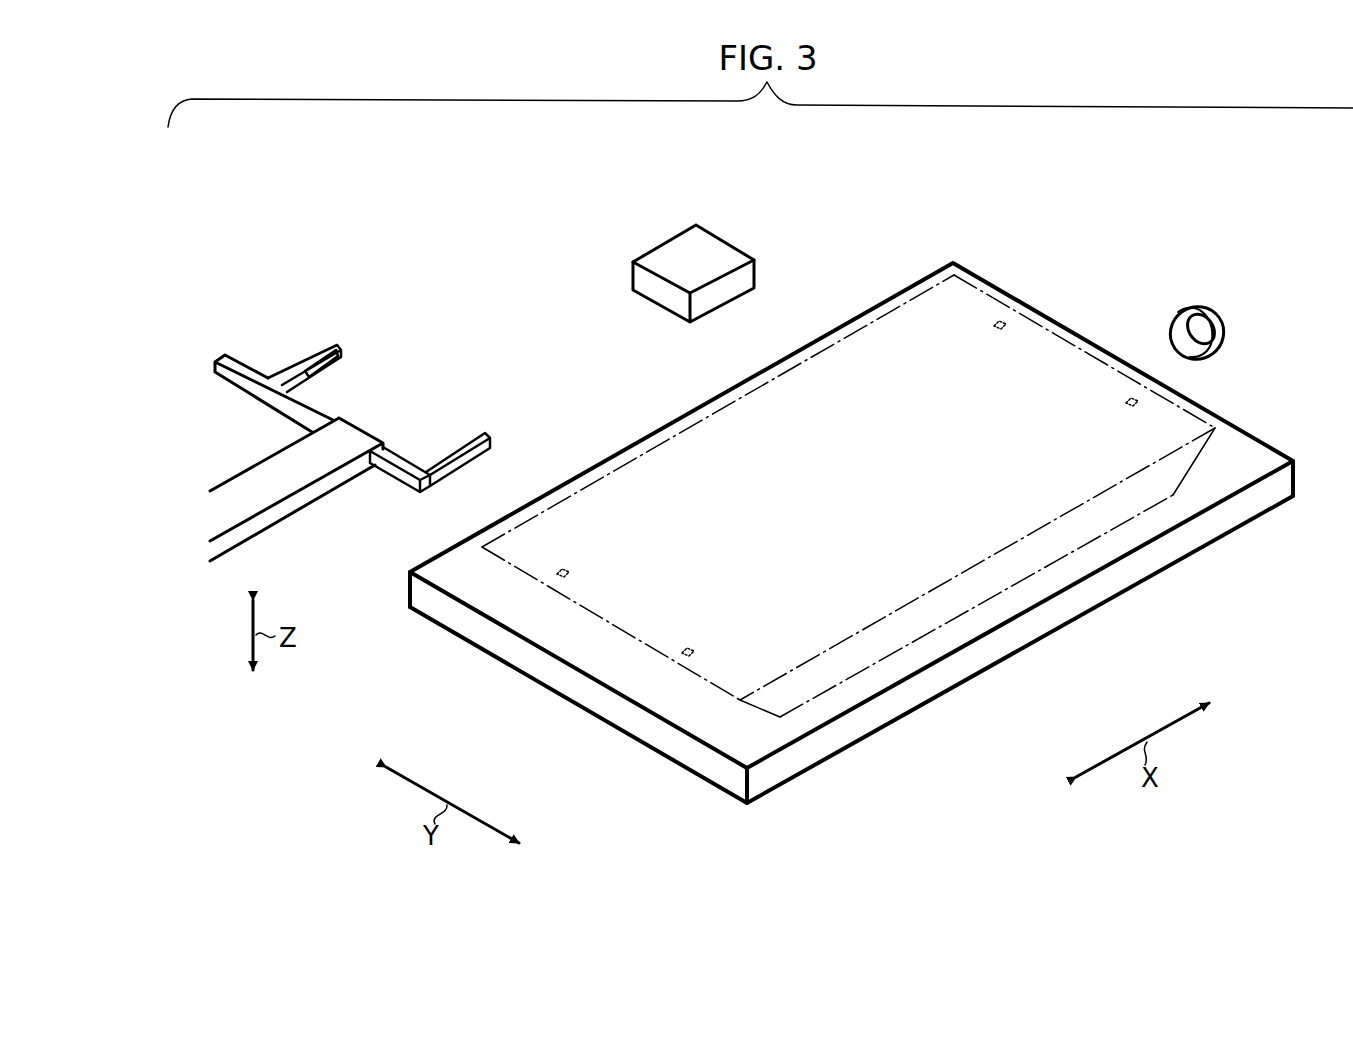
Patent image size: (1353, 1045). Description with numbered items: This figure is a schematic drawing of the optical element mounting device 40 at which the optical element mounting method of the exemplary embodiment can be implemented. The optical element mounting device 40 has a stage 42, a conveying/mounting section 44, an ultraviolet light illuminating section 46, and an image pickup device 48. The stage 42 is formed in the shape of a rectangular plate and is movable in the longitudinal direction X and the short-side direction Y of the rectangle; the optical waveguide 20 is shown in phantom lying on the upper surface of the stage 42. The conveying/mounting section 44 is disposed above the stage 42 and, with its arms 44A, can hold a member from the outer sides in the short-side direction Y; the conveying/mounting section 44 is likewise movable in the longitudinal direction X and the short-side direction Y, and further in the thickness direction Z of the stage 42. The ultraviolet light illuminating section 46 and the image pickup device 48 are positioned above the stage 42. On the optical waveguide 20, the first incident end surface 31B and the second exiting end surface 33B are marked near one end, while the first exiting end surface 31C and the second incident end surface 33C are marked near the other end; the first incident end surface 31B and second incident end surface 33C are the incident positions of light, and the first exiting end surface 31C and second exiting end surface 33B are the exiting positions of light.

The optical waveguide 20 is at (850, 494).
The first incident end surface 31B is at (686, 652).
The first exiting end surface 31C is at (1138, 402).
The second exiting end surface 33B is at (558, 573).
The second incident end surface 33C is at (998, 318).
The optical element mounting device 40 is at (851, 469).
The stage 42 is at (1240, 526).
The conveying/mounting section 44 is at (401, 427).
The arms 44A is at (306, 355).
The ultraviolet light illuminating section 46 is at (1200, 307).
The image pickup device 48 is at (722, 240).